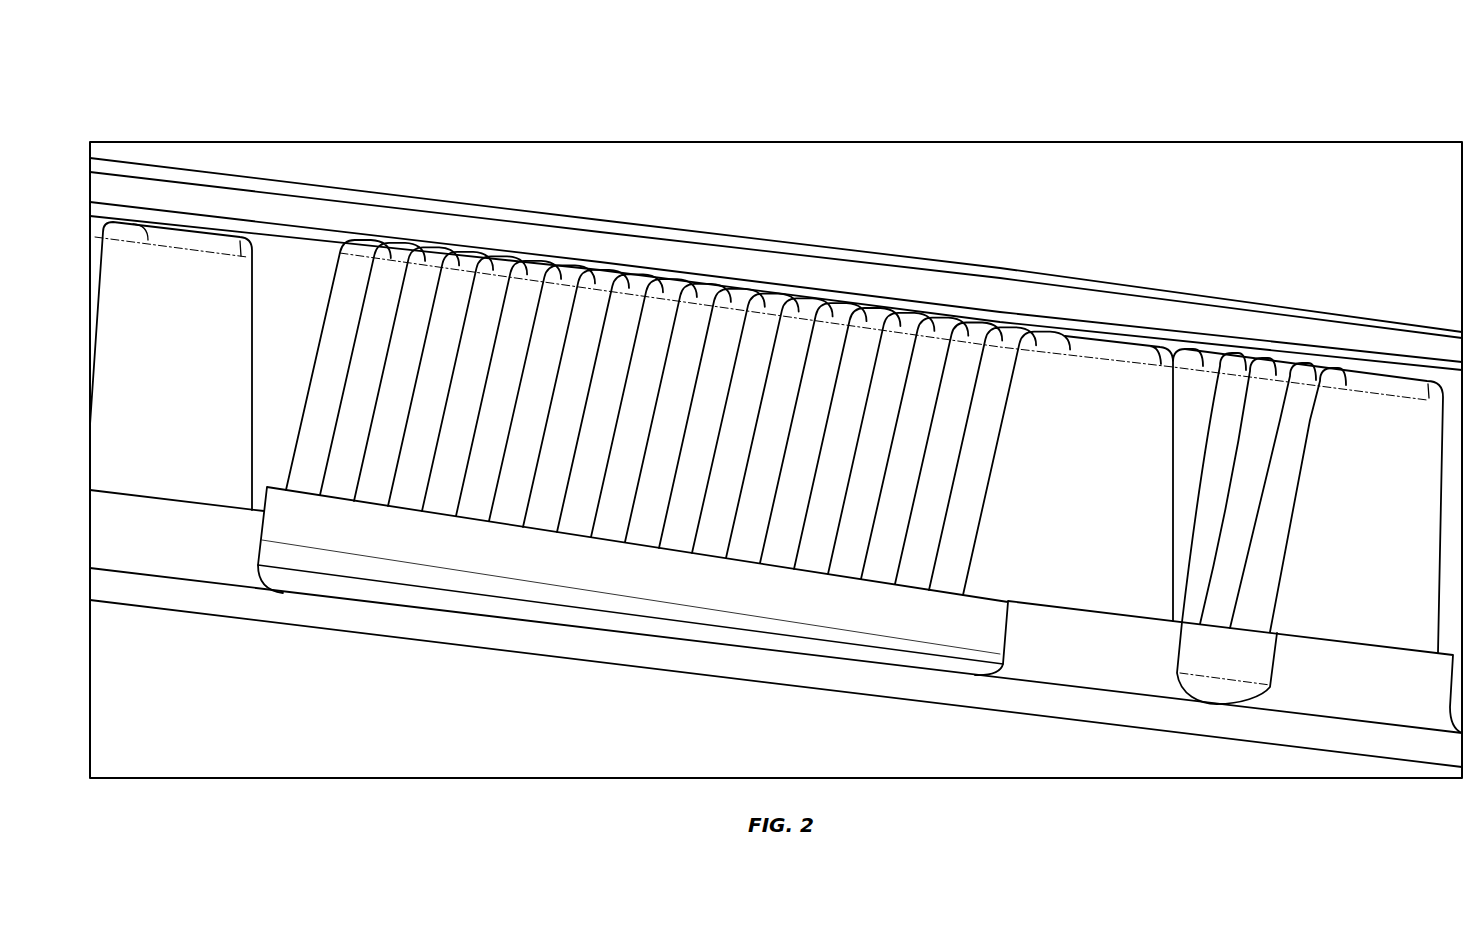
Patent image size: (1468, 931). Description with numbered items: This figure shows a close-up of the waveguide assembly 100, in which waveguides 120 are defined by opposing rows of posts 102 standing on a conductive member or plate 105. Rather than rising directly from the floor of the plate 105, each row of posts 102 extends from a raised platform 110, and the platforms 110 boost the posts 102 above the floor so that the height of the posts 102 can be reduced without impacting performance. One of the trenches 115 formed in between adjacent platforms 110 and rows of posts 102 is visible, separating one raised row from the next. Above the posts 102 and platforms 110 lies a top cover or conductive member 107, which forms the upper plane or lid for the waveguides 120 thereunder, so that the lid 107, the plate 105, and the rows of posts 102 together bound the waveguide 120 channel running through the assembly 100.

The waveguide assembly 100 is at (1391, 73).
The post 102 is at (180, 307).
The conductive member/plate 105 is at (353, 618).
The top cover or conductive member 107 is at (933, 287).
The platform 110 is at (168, 560).
The trench 115 is at (1207, 685).
The waveguide 120 is at (484, 594).